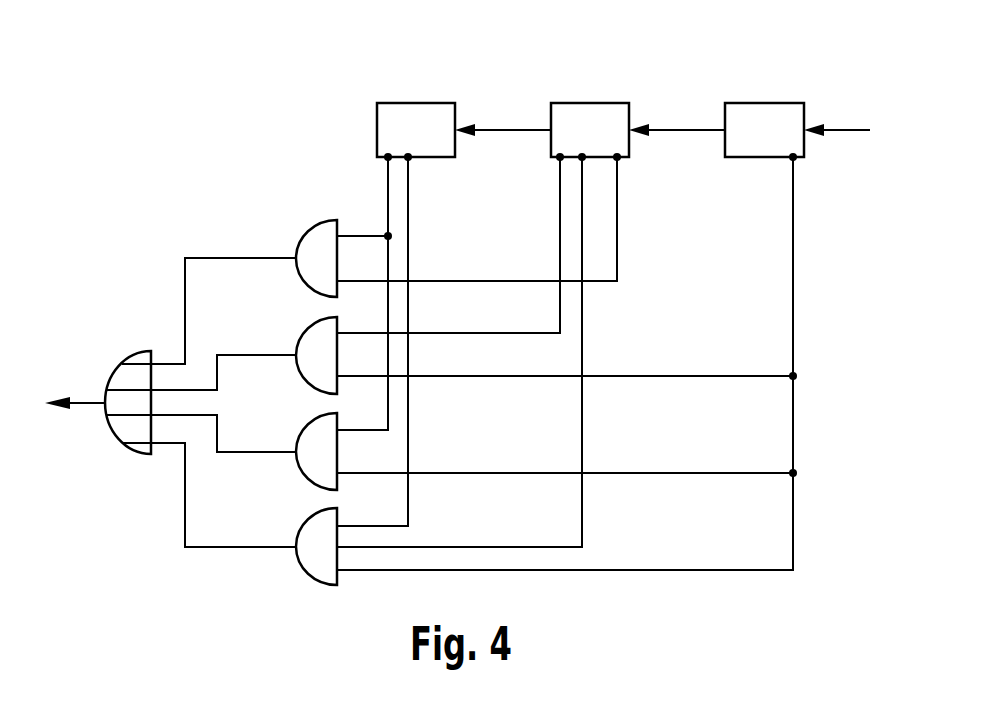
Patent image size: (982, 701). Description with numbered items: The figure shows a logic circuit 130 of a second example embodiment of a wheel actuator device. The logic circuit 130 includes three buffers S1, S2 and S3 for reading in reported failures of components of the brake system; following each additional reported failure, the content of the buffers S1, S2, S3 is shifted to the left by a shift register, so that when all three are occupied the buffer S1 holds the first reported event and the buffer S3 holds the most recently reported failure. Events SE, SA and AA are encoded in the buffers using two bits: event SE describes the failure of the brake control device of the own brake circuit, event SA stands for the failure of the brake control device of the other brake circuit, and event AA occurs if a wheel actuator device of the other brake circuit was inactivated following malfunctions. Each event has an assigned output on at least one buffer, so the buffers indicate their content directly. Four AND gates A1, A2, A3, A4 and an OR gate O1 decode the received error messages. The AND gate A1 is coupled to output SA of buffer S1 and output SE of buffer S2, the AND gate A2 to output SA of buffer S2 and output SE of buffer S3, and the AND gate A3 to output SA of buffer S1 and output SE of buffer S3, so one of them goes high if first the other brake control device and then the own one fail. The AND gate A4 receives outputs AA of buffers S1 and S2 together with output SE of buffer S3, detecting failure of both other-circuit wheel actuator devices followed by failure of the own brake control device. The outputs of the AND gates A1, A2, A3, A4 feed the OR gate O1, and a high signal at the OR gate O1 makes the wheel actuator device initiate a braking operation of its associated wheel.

The logic circuit 130 is at (212, 142).
The buffer S1 is at (432, 142).
The buffer S2 is at (606, 142).
The buffer S3 is at (781, 142).
The event SA is at (385, 161).
The event AA is at (410, 161).
The event SE is at (619, 161).
The AND gate A1 is at (310, 242).
The AND gate A2 is at (310, 338).
The AND gate A3 is at (310, 435).
The AND gate A4 is at (310, 533).
The OR gate O1 is at (137, 352).